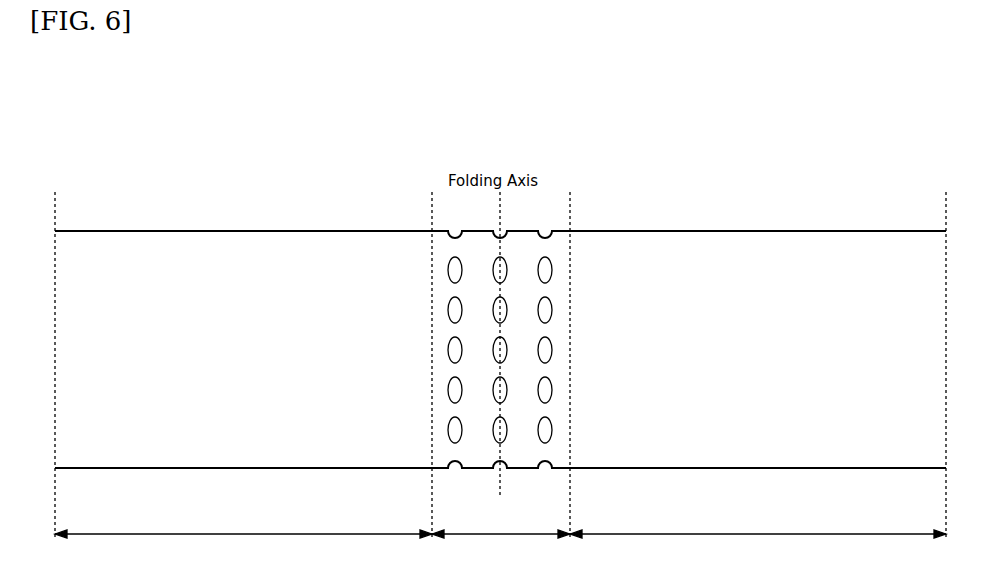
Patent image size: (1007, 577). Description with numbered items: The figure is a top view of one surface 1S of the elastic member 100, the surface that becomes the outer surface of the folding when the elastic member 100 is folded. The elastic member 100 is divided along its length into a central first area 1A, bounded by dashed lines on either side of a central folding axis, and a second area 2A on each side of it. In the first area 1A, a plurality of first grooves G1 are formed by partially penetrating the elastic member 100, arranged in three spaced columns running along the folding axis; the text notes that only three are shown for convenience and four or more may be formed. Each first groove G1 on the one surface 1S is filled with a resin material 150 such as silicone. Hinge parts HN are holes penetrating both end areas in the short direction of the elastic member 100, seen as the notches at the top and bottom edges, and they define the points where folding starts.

The elastic member 100 is at (862, 231).
The one surface 1S is at (75, 255).
The hinge part HN is at (455, 238).
The first groove G1 is at (546, 238).
The resin material 150 is at (549, 304).
The first area 1A is at (501, 545).
The second area 2A is at (500, 545).